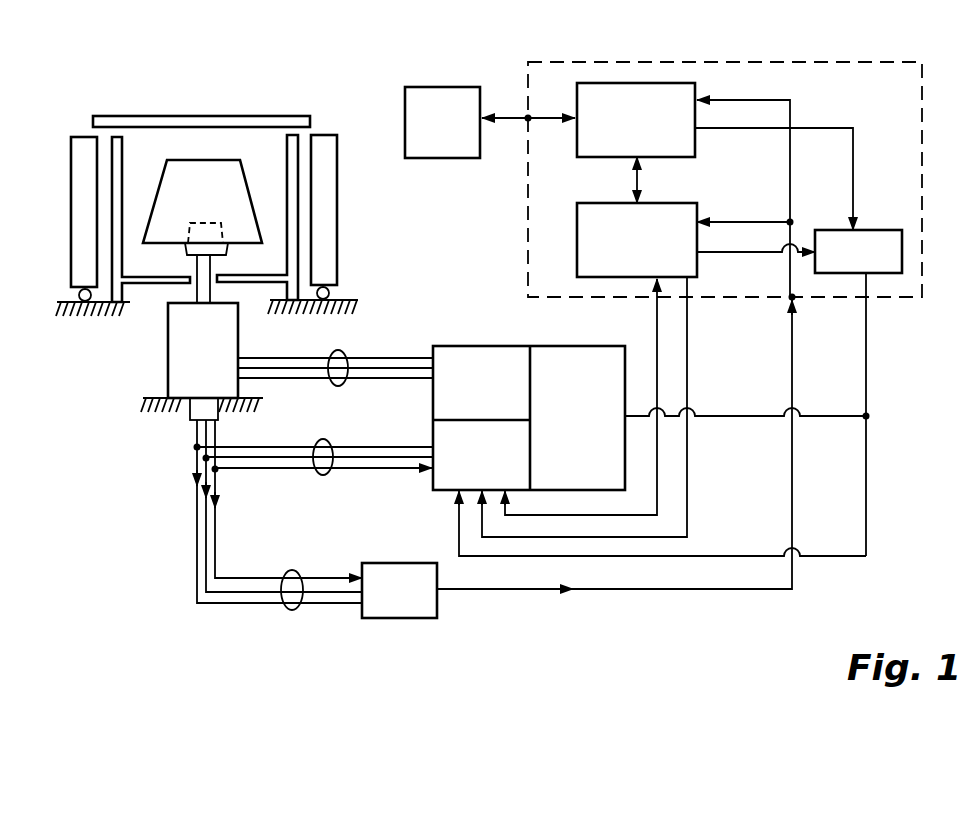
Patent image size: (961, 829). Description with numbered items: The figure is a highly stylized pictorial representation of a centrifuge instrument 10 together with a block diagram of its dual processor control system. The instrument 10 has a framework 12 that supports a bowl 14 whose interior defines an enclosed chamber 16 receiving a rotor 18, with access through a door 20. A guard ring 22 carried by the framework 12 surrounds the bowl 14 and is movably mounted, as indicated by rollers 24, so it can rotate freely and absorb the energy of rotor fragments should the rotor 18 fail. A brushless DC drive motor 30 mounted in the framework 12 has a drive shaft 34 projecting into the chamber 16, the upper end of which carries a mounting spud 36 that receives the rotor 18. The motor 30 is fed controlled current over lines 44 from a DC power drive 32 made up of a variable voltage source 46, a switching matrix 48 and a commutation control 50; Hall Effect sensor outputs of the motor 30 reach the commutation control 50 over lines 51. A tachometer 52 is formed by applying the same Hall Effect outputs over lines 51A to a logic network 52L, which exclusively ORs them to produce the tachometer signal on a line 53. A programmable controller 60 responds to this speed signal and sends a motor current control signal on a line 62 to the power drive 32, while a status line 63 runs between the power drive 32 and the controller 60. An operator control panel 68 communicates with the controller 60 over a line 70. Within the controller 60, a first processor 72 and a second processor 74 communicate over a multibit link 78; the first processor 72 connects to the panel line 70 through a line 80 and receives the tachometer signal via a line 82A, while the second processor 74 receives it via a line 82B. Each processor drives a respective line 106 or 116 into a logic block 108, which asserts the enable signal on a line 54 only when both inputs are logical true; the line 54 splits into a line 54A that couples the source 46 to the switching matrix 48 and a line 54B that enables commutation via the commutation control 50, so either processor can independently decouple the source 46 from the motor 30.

The centrifuge instrument 10 is at (393, 65).
The framework 12 is at (82, 318).
The bowl 14 is at (298, 195).
The chamber 16 is at (275, 159).
The rotor 18 is at (163, 172).
The door 20 is at (183, 116).
The guard ring 22 is at (78, 215).
The rollers 24 is at (78, 297).
The drive motor 30 is at (175, 352).
The DC power drive 32 is at (529, 399).
The drive shaft 34 is at (210, 270).
The mounting spud 36 is at (187, 250).
The lines 44 is at (340, 386).
The variable voltage source 46 is at (593, 428).
The switching matrix 48 is at (476, 383).
The commutation control 50 is at (477, 458).
The lines 51 is at (322, 475).
The lines 51A is at (290, 610).
The tachometer 52 is at (198, 623).
The logic network 52L is at (373, 540).
The line 53 is at (617, 589).
The line 54 is at (866, 370).
The line 54A is at (730, 418).
The line 54B is at (773, 533).
The programmable controller 60 is at (928, 132).
The line 62 is at (687, 332).
The status line 63 is at (657, 322).
The operator control panel 68 is at (437, 87).
The line 70 is at (508, 118).
The first processor 72 is at (651, 126).
The second processor 74 is at (651, 246).
The multibit link 78 is at (640, 183).
The line 80 is at (550, 118).
The line 82A is at (825, 163).
The line 82B is at (733, 222).
The line 106 is at (853, 185).
The logic block 108 is at (892, 243).
The line 116 is at (760, 253).